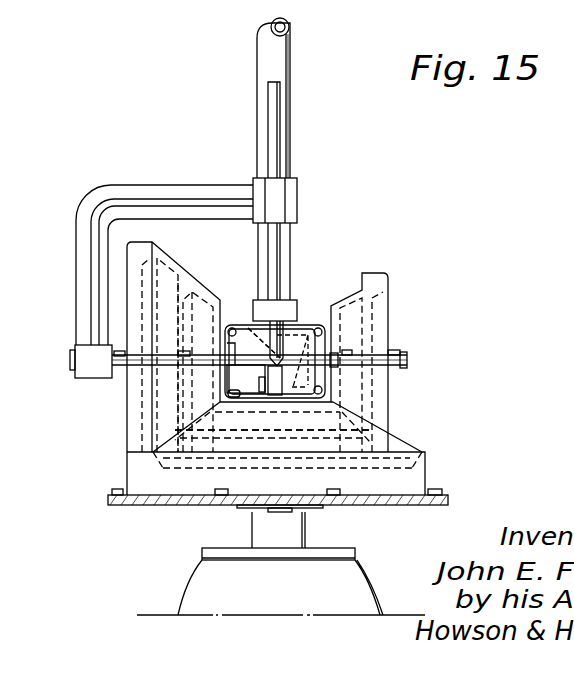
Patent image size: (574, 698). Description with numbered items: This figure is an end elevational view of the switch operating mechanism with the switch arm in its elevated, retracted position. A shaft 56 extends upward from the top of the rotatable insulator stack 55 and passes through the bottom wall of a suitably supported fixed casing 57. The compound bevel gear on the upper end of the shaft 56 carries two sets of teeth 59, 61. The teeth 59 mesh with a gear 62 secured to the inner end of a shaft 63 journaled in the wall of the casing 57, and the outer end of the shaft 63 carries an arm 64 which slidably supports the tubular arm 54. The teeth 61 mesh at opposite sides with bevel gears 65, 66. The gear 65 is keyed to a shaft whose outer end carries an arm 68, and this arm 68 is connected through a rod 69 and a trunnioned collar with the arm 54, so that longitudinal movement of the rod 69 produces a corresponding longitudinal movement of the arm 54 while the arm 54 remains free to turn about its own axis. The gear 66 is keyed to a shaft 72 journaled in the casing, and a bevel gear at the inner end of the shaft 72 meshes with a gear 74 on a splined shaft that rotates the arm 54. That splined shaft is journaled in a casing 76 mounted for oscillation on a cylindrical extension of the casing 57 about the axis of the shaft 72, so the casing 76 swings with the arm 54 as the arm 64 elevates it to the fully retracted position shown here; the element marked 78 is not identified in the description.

The arm 54 is at (291, 125).
The rotatable insulator stack 55 is at (352, 578).
The shaft 56 is at (270, 510).
The fixed casing 57 is at (450, 503).
The teeth 59 is at (421, 442).
The teeth 61 is at (385, 412).
The gear 62 is at (172, 270).
The shaft 63 is at (71, 362).
The arm 64 is at (110, 185).
The bevel gear 65 is at (220, 292).
The bevel gear 66 is at (347, 300).
The arm 68 is at (237, 352).
The rod 69 is at (272, 240).
The shaft 72 is at (408, 361).
The gear 74 is at (262, 330).
The casing 76 is at (307, 325).
The plate 78 is at (287, 402).